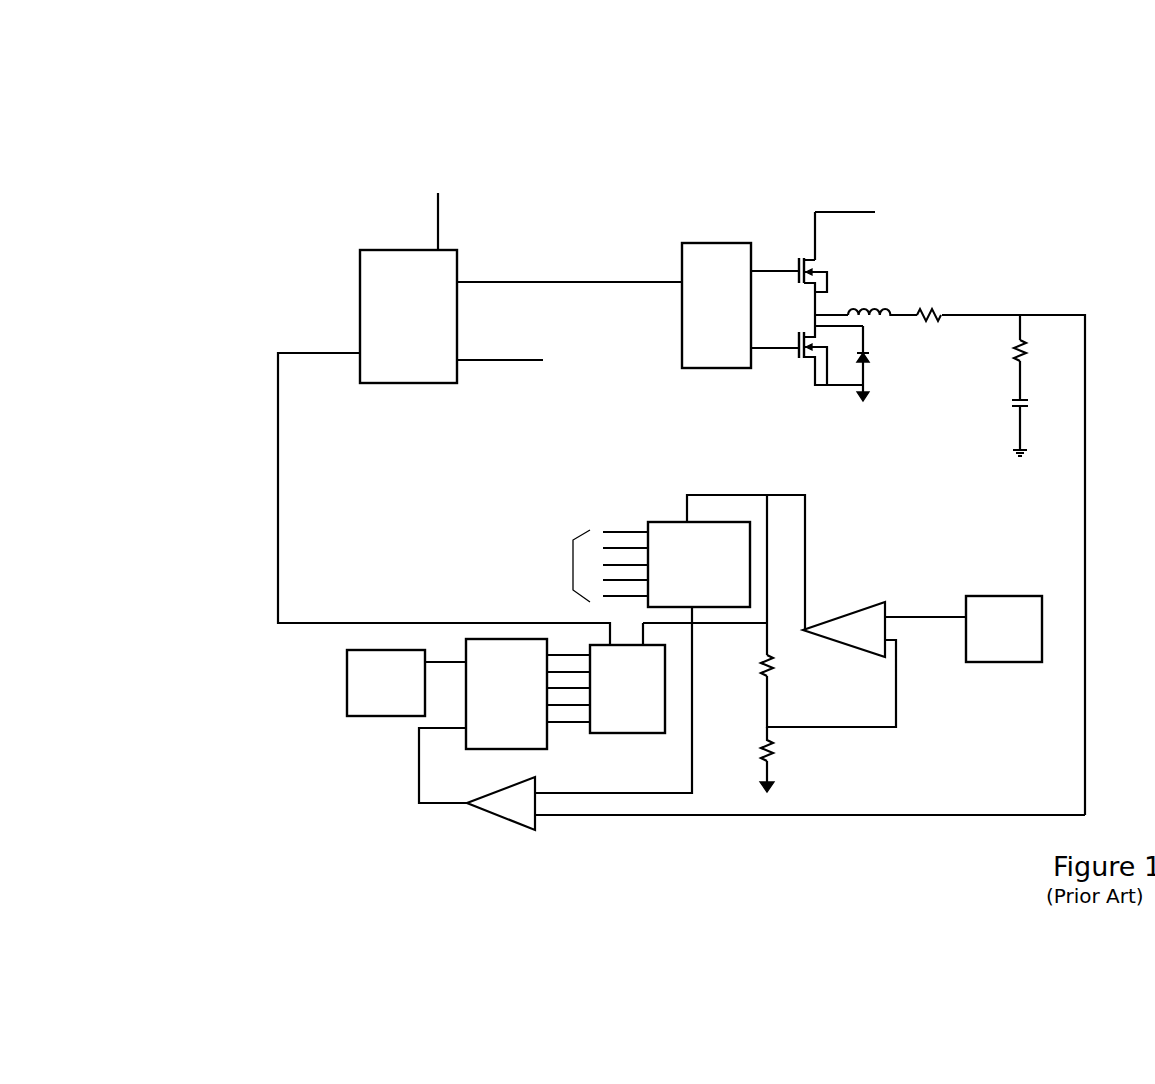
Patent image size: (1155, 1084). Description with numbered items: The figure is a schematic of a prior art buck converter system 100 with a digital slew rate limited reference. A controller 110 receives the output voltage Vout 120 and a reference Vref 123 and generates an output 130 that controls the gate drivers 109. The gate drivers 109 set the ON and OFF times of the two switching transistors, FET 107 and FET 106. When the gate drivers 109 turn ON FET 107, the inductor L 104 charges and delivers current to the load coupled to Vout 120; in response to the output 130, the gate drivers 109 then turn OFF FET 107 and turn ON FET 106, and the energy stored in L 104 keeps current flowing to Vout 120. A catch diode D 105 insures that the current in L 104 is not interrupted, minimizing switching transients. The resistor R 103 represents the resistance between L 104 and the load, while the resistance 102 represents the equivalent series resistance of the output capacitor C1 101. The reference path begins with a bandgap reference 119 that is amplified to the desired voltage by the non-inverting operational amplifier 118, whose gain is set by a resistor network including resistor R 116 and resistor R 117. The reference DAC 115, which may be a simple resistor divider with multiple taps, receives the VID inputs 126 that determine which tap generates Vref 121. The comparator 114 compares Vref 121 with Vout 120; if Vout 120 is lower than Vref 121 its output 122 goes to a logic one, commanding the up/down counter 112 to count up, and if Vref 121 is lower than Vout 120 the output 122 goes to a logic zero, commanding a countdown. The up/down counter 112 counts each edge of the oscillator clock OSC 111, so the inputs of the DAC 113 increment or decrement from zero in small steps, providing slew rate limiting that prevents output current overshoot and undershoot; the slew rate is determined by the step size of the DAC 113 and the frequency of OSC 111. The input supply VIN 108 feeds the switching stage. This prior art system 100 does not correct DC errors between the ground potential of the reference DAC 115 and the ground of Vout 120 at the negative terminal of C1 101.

The buck converter system 100 is at (824, 138).
The capacitor C 101 is at (1028, 406).
The resistance 102 is at (1024, 357).
The resistor R 103 is at (940, 298).
The inductor L 104 is at (868, 303).
The catch diode D 105 is at (850, 360).
The FET 106 is at (817, 339).
The FET 107 is at (818, 265).
The input voltage VIN 108 is at (900, 188).
The gate drivers 109 is at (707, 243).
The controller 110 is at (412, 250).
The oscillator 111 is at (395, 706).
The up/down counter 112 is at (516, 706).
The digital to analog converter (DAC) 113 is at (640, 723).
The comparator 114 is at (503, 819).
The reference DAC 115 is at (726, 575).
The resistor R 116 is at (775, 672).
The resistor R 117 is at (774, 763).
The non-inverting operational amplifier (OPA) 118 is at (841, 644).
The bandgap reference 119 is at (1000, 594).
The Vout 120 is at (515, 365).
The Vref 121 is at (596, 792).
The output 122 is at (418, 772).
The Vref 123 is at (281, 545).
The VID inputs 126 is at (563, 545).
The output 130 is at (545, 279).